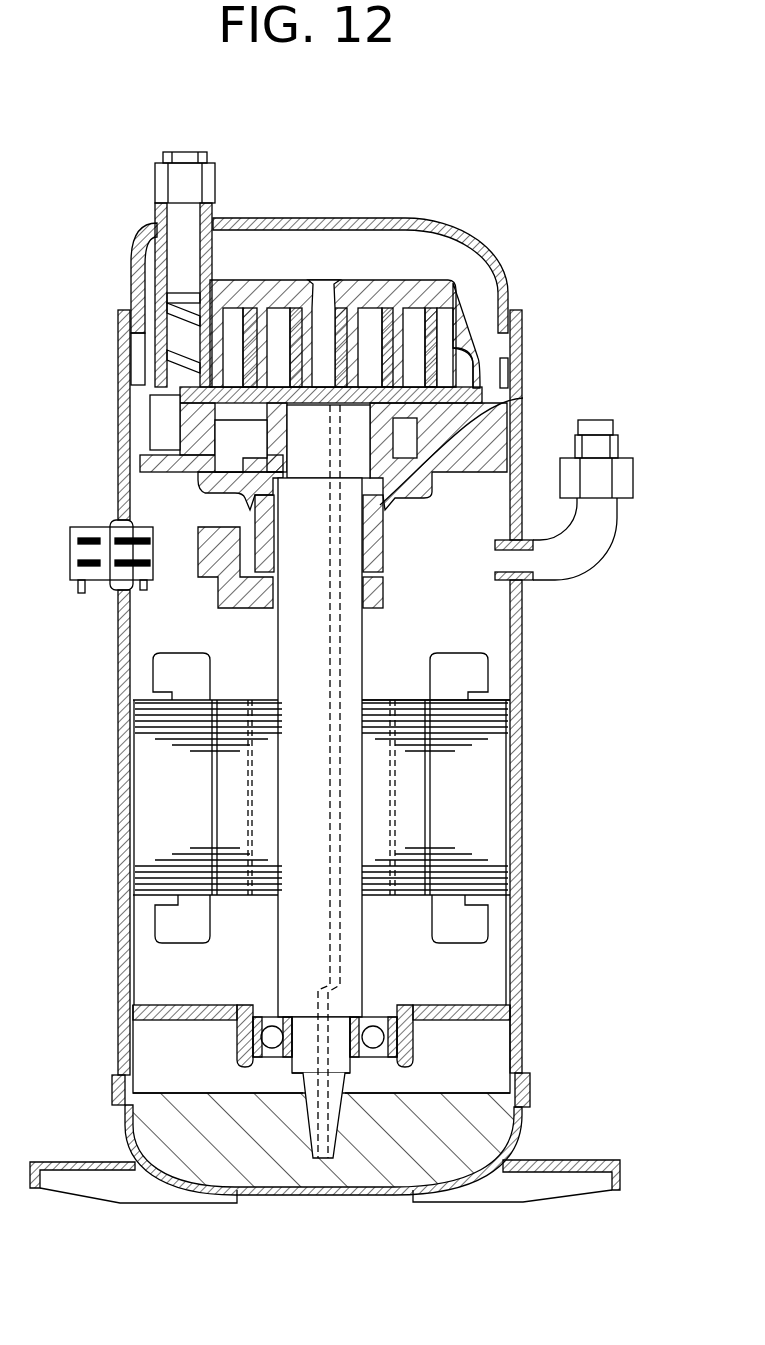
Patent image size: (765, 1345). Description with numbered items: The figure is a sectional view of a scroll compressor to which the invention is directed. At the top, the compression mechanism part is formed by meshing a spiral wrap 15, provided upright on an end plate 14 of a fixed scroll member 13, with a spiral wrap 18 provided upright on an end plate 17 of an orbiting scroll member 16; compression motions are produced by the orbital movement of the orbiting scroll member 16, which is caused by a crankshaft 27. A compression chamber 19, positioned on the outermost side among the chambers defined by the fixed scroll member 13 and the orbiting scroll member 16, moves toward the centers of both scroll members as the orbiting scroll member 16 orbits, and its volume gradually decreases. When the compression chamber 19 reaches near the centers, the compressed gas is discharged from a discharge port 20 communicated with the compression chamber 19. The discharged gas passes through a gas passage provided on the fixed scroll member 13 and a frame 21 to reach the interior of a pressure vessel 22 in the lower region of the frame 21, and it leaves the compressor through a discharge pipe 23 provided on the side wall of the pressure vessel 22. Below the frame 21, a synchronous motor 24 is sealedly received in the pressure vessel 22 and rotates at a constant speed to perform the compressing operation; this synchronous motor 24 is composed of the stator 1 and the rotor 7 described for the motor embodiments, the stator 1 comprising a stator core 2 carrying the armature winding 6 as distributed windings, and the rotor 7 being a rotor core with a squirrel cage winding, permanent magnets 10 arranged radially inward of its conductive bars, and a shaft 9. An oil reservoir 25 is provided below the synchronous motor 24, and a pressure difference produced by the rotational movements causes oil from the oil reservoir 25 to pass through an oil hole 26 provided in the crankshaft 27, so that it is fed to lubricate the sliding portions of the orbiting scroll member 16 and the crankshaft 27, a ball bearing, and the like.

The stator 1 is at (150, 695).
The stator core 2 is at (152, 782).
The armature winding 6 is at (165, 927).
The rotor core 7 is at (372, 787).
The shaft 9 is at (300, 557).
The permanent magnets 10 is at (397, 818).
The fixed scroll member 13 is at (415, 318).
The end plate 14 is at (370, 295).
The spiral wrap 15 is at (282, 327).
The orbiting scroll member 16 is at (167, 430).
The end plate 17 is at (163, 392).
The spiral wrap 18 is at (477, 343).
The compression chamber 19 is at (458, 295).
The discharge port 20 is at (325, 290).
The frame 21 is at (215, 488).
The pressure vessel 22 is at (523, 610).
The discharge pipe 23 is at (607, 523).
The synchronous motor 24 is at (497, 698).
The oil reservoir 25 is at (463, 1137).
The oil hole 26 is at (345, 962).
The crankshaft 27 is at (523, 398).